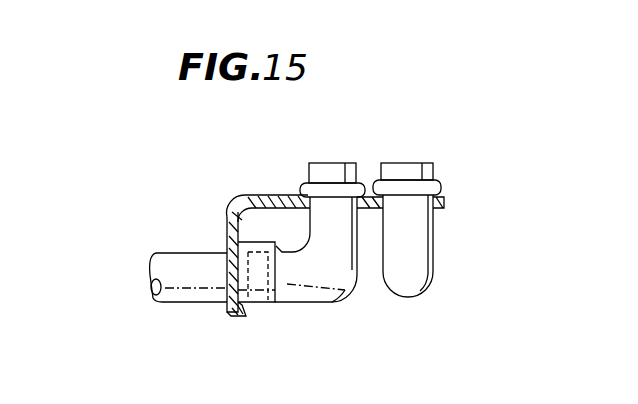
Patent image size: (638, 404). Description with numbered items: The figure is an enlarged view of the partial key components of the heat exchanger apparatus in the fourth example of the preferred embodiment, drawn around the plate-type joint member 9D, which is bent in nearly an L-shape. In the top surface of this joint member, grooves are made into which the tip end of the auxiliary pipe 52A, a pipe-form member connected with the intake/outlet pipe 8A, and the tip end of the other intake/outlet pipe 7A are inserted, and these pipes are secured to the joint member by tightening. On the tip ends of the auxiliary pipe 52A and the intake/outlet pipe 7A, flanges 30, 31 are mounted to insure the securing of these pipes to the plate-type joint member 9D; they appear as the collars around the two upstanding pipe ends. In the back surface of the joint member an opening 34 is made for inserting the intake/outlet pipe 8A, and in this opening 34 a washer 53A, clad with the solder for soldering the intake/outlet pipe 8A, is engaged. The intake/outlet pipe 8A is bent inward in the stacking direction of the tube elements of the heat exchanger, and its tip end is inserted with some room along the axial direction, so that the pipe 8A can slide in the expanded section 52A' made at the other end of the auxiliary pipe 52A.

The pipe joint body 9D is at (240, 205).
The flange 31 is at (303, 188).
The flange 30 is at (440, 186).
The washer 53A is at (227, 255).
The intake/outlet pipe 7A is at (428, 257).
The intake/outlet pipe 8A is at (192, 292).
The opening 34 is at (232, 308).
The expanded section 52A' is at (301, 299).
The auxiliary pipe 52A is at (392, 323).